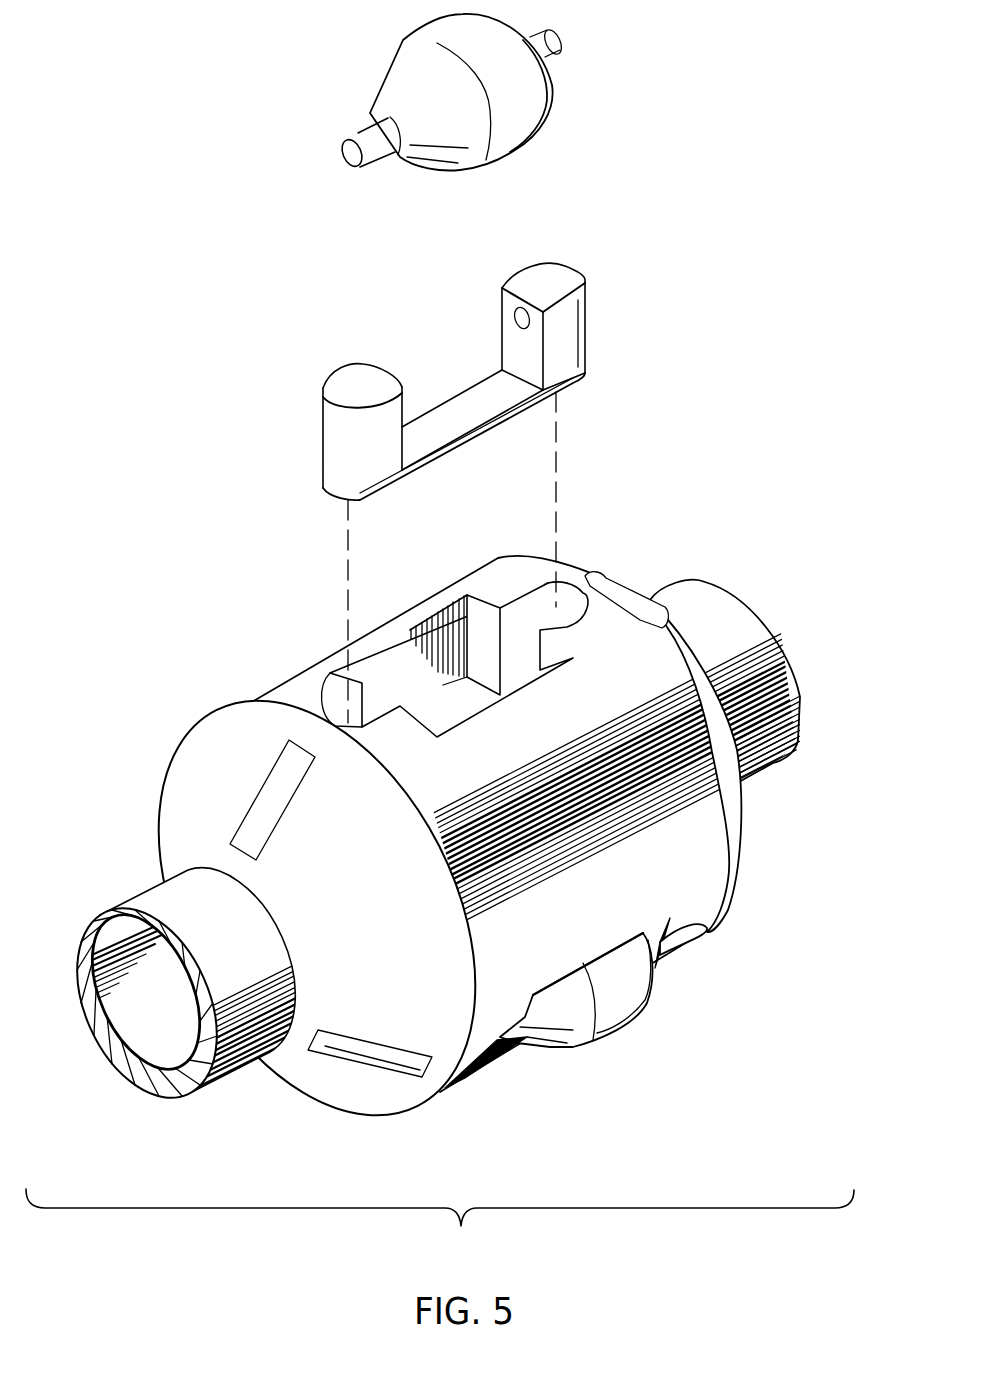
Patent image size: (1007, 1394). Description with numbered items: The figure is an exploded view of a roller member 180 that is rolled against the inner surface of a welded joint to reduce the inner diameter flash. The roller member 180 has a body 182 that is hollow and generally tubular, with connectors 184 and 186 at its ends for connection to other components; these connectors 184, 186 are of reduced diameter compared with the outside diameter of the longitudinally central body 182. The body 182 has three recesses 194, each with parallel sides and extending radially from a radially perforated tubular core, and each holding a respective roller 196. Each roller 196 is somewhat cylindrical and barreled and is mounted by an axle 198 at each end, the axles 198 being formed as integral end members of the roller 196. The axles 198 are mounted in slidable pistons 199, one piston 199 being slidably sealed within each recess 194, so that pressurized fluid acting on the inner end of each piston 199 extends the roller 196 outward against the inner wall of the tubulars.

The roller member 180 is at (118, 505).
The body 182 is at (690, 980).
The connector 184 is at (780, 670).
The connector 186 is at (150, 895).
The recess 194 is at (455, 707).
The roller 196 is at (533, 107).
The axle 198 is at (360, 133).
The piston 199 is at (570, 275).